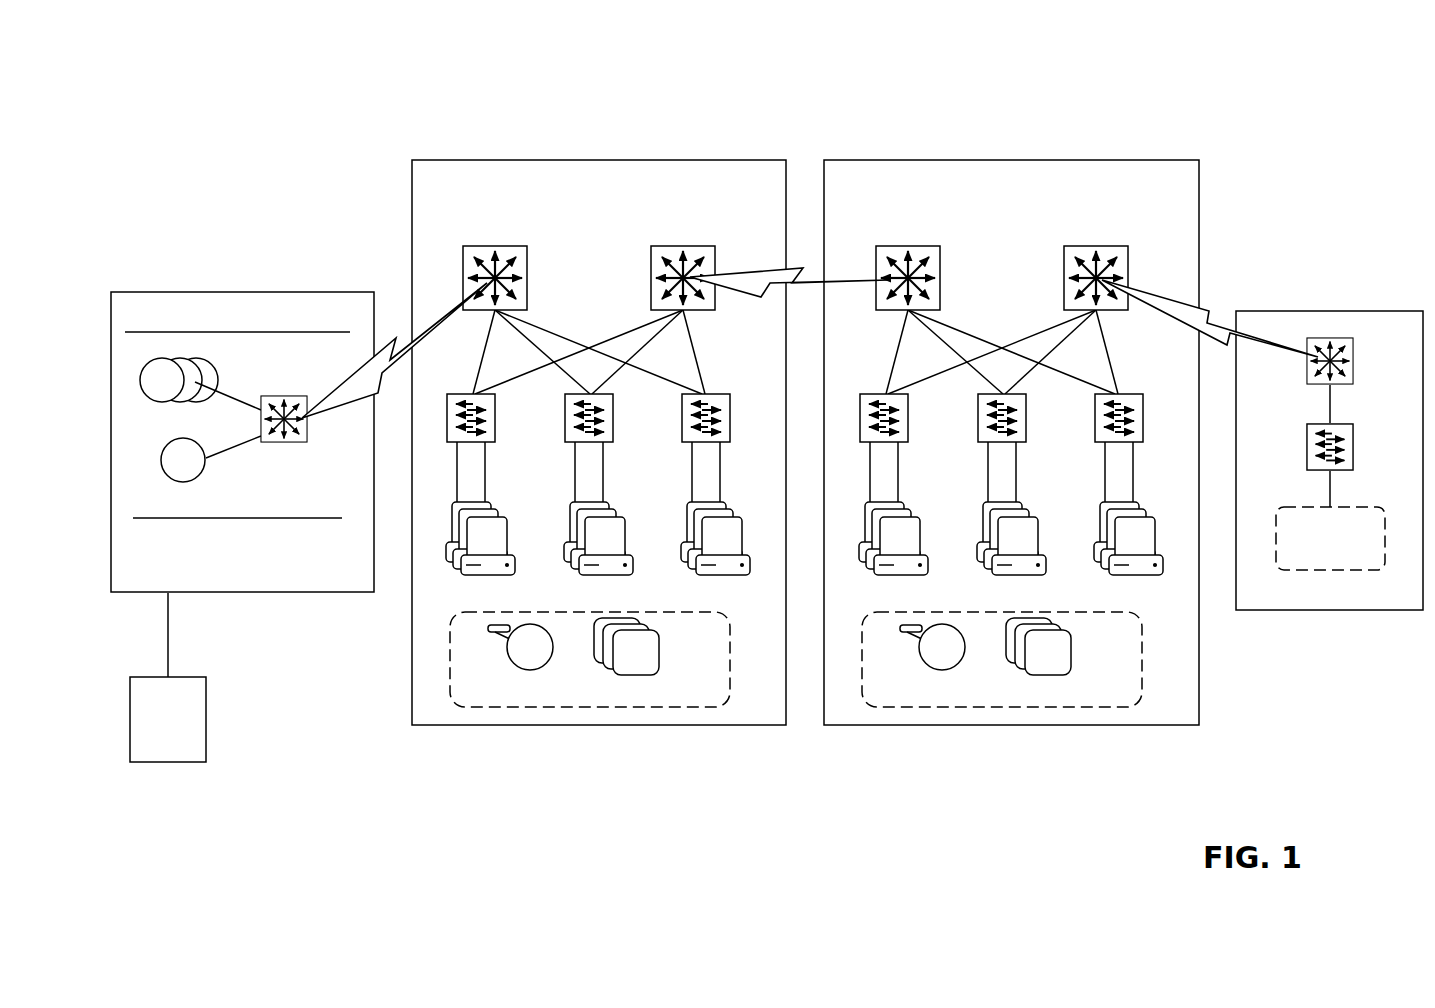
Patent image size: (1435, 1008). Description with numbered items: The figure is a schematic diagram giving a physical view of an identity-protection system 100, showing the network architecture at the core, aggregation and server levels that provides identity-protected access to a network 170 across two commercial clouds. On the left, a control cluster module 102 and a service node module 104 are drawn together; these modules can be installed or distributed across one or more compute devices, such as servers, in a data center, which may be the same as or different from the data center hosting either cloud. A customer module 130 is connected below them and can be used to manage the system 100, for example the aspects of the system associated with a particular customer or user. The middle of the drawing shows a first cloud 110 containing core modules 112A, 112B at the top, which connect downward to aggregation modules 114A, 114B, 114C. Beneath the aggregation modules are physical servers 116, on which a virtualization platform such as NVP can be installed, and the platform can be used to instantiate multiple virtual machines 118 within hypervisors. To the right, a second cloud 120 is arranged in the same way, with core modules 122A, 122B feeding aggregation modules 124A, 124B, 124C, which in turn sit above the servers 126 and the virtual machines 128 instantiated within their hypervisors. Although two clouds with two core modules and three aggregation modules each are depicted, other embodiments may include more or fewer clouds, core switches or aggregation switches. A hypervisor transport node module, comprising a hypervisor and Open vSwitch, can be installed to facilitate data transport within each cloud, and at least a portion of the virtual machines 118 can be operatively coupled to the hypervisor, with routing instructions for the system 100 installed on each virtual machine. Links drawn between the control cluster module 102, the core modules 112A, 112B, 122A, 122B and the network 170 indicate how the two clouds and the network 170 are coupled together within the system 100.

The identity-protection system 100 is at (366, 96).
The control cluster module 102 is at (241, 300).
The service node module 104 is at (295, 582).
The first cloud 110 is at (610, 195).
The core module 112A is at (495, 265).
The core module 112B is at (683, 265).
The aggregation module 114A is at (500, 415).
The aggregation module 114B is at (618, 415).
The aggregation module 114C is at (728, 404).
The physical servers 116 is at (610, 508).
The virtual machines 118 is at (590, 659).
The second cloud 120 is at (1022, 195).
The core module 122A is at (908, 265).
The core module 122B is at (1096, 265).
The aggregation module 124A is at (913, 415).
The aggregation module 124B is at (1031, 415).
The aggregation module 124C is at (1140, 404).
The host servers in cloud 2 126 is at (1023, 508).
The VMs within hypervisors in cloud 2 128 is at (1002, 659).
The customer module 130 is at (168, 677).
The network 170 is at (1329, 460).